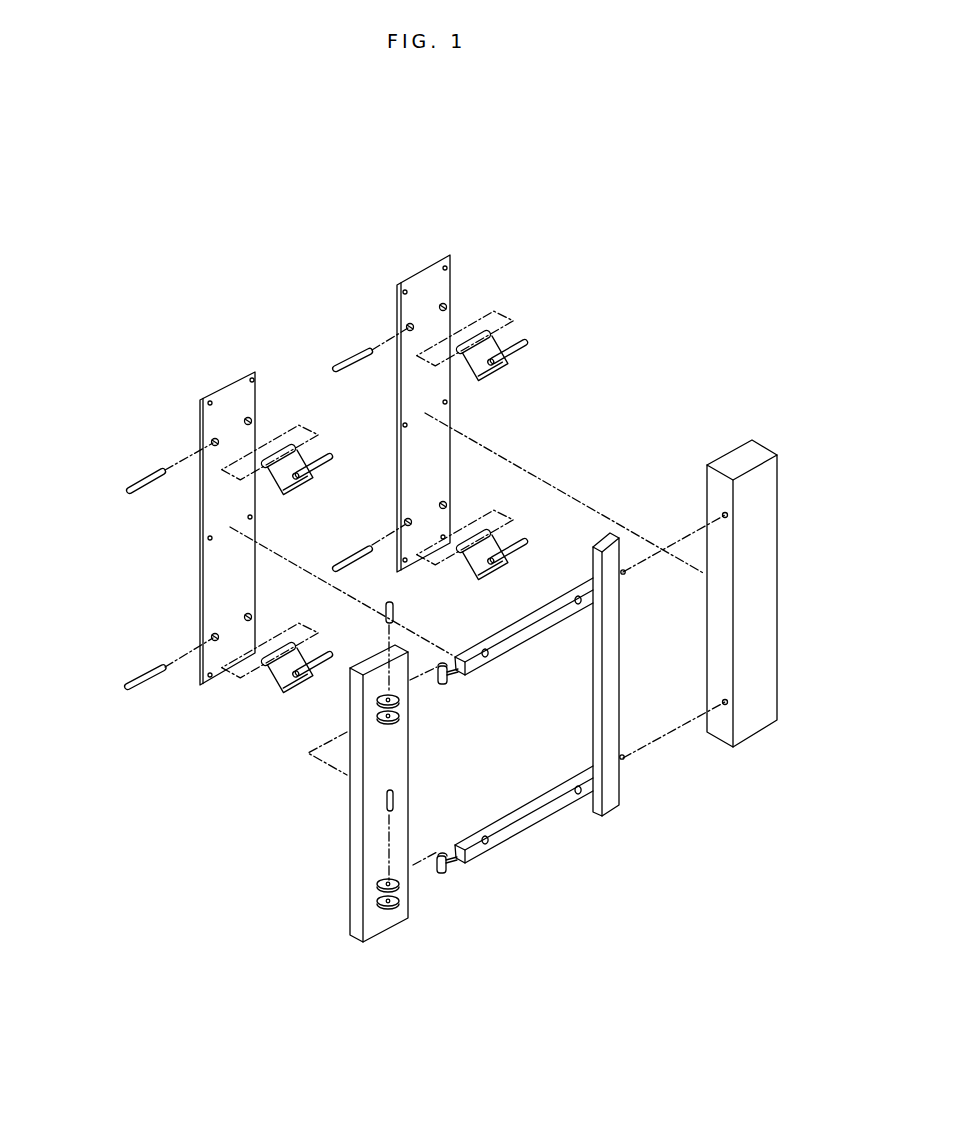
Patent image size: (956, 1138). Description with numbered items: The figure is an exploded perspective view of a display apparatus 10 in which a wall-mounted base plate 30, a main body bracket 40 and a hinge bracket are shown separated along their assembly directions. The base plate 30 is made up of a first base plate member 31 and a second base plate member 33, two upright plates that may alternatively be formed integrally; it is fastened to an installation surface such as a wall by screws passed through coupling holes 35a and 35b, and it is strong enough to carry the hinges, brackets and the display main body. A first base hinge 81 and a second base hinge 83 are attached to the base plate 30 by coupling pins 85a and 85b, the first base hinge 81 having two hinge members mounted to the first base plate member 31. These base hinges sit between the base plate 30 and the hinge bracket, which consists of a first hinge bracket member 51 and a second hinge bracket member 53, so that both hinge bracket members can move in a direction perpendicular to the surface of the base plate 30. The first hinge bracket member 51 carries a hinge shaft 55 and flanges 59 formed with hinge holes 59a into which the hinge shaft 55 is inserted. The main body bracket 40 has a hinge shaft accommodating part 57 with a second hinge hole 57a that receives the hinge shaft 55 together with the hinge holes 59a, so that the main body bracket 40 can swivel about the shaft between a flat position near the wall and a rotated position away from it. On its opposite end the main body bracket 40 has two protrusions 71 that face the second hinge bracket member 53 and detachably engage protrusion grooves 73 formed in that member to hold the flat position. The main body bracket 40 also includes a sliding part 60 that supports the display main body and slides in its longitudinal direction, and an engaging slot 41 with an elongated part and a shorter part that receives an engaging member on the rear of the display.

The display apparatus 10 is at (157, 252).
The base plate 30 is at (387, 222).
The first base plate member 31 is at (227, 383).
The second base plate member 33 is at (418, 270).
The coupling holes 35a is at (200, 402).
The coupling holes 35b is at (452, 260).
The main body bracket 40 is at (620, 790).
The engaging slot 41 is at (578, 795).
The first hinge bracket member 51 is at (353, 720).
The second hinge bracket member 53 is at (777, 572).
The hinge shaft 55 is at (385, 798).
The hinge shaft accommodating part 57 is at (443, 872).
The second hinge hole 57a is at (437, 856).
The flanges 59 is at (387, 903).
The hinge holes 59a is at (387, 880).
The sliding part 60 is at (468, 864).
The protrusion 71 is at (623, 755).
The protrusion groove 73 is at (728, 515).
The first base hinge 81 is at (280, 650).
The second base hinge 83 is at (488, 537).
The coupling pins 85a is at (127, 490).
The coupling pins 85b is at (357, 363).